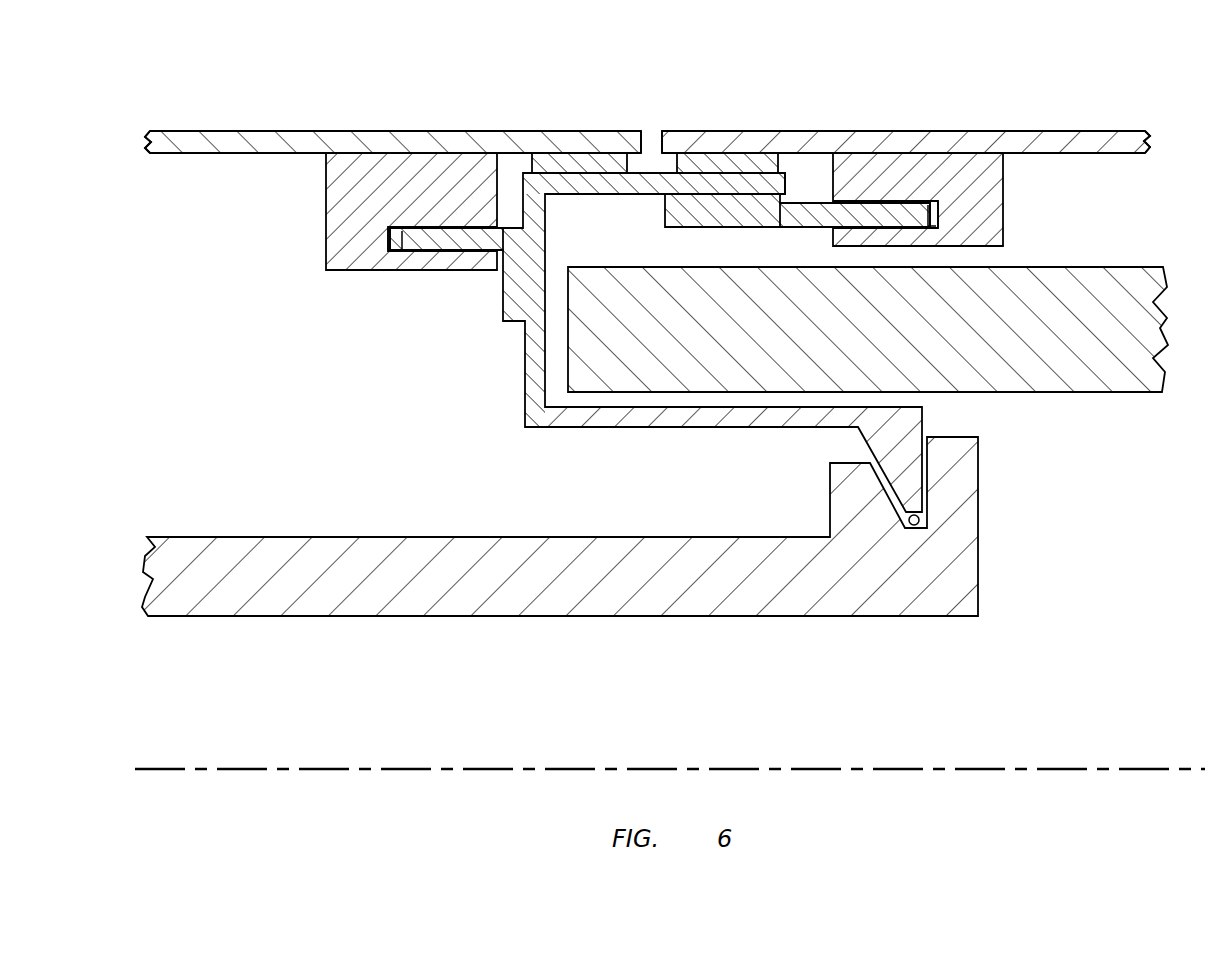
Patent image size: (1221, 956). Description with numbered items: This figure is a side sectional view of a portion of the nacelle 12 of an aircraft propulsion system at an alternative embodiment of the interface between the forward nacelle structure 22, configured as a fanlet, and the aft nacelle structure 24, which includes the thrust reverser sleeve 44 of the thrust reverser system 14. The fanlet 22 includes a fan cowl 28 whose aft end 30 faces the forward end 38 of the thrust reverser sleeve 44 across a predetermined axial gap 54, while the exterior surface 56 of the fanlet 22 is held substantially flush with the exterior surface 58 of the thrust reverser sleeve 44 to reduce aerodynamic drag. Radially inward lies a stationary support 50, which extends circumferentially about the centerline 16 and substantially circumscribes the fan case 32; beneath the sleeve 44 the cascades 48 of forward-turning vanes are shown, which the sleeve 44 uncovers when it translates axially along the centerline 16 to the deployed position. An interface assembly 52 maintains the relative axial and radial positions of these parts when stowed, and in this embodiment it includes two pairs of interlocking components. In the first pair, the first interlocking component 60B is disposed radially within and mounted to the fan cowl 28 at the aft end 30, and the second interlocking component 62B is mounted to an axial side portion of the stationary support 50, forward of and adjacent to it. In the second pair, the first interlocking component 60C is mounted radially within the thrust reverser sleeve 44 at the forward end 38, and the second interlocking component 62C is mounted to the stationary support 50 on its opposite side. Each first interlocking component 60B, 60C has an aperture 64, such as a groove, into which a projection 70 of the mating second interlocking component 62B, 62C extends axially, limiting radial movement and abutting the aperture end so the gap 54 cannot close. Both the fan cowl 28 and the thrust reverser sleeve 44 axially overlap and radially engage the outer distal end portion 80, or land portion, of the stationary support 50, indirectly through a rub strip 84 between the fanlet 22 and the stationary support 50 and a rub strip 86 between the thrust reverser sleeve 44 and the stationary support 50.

The nacelle 12 is at (1068, 108).
The thrust reverser system 14 is at (1148, 233).
The centerline 16 is at (1107, 768).
The forward nacelle structure 22 is at (183, 128).
The aft nacelle structure 24 is at (1130, 130).
The fan cowl 28 is at (236, 131).
The aft end 30 is at (643, 140).
The fan case 32 is at (337, 537).
The forward end 38 is at (660, 140).
The thrust reverser sleeve 44 is at (1020, 131).
The cascades 48 is at (1098, 375).
The stationary support 50 is at (559, 435).
The interface assembly 52 is at (420, 336).
The axial gap 54 is at (652, 147).
The exterior surface 56 is at (334, 131).
The exterior surface 58 is at (927, 131).
The first interlocking component 60B is at (320, 233).
The first interlocking component 60C is at (1008, 178).
The second interlocking component 62B is at (500, 318).
The second interlocking component 62C is at (703, 235).
The aperture 64 is at (395, 250).
The projection 70 is at (445, 250).
The outer distal end portion 80 is at (598, 183).
The rub strip 84 is at (518, 152).
The rub strip 86 is at (780, 165).